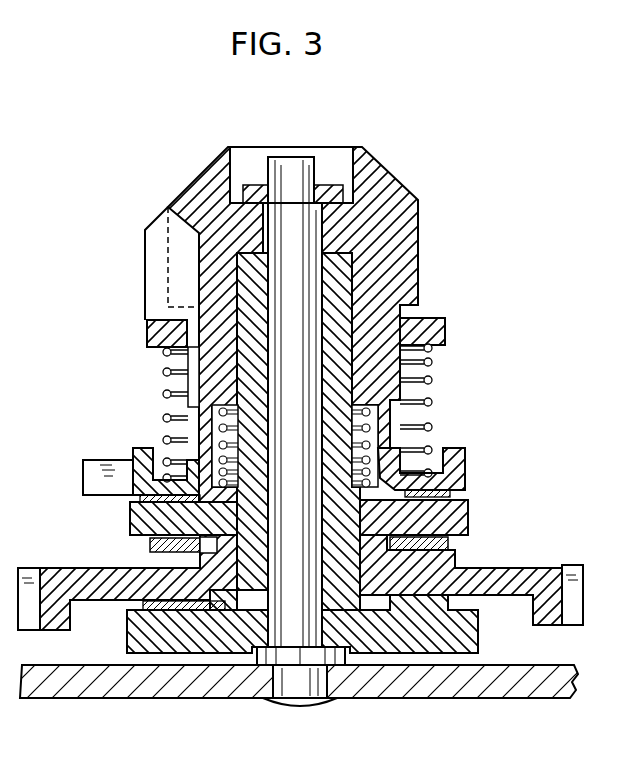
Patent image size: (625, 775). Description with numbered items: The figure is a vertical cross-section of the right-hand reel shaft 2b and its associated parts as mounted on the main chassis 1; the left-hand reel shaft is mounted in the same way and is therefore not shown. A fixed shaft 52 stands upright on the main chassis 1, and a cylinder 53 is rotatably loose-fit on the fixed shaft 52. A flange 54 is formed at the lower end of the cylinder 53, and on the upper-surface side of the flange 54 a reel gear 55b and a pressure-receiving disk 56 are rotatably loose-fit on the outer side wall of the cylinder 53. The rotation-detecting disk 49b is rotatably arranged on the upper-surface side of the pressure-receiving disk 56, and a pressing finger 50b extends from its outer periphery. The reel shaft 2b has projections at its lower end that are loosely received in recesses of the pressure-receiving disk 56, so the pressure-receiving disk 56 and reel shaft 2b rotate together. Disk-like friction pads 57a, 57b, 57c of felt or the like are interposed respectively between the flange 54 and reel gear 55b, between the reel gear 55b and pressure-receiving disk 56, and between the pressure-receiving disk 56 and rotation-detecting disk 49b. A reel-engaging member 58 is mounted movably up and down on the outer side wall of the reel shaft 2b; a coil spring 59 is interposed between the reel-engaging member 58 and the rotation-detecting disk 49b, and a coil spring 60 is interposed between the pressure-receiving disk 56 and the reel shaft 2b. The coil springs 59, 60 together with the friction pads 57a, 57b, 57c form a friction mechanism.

The main chassis 1 is at (522, 685).
The reel shaft 2b is at (389, 183).
The rotation-detecting disk 49b is at (462, 466).
The pressing finger 50b is at (92, 475).
The fixed shaft 52 is at (297, 300).
The cylinder 53 is at (343, 368).
The flange 54 is at (458, 640).
The reel gear 55b is at (533, 577).
The pressure-receiving disk 56 is at (468, 512).
The friction pad 57a is at (157, 613).
The friction pad 57b is at (152, 542).
The friction pad 57c is at (140, 500).
The reel-engaging member 58 is at (157, 246).
The coil spring 59 is at (166, 373).
The coil spring 60 is at (205, 430).